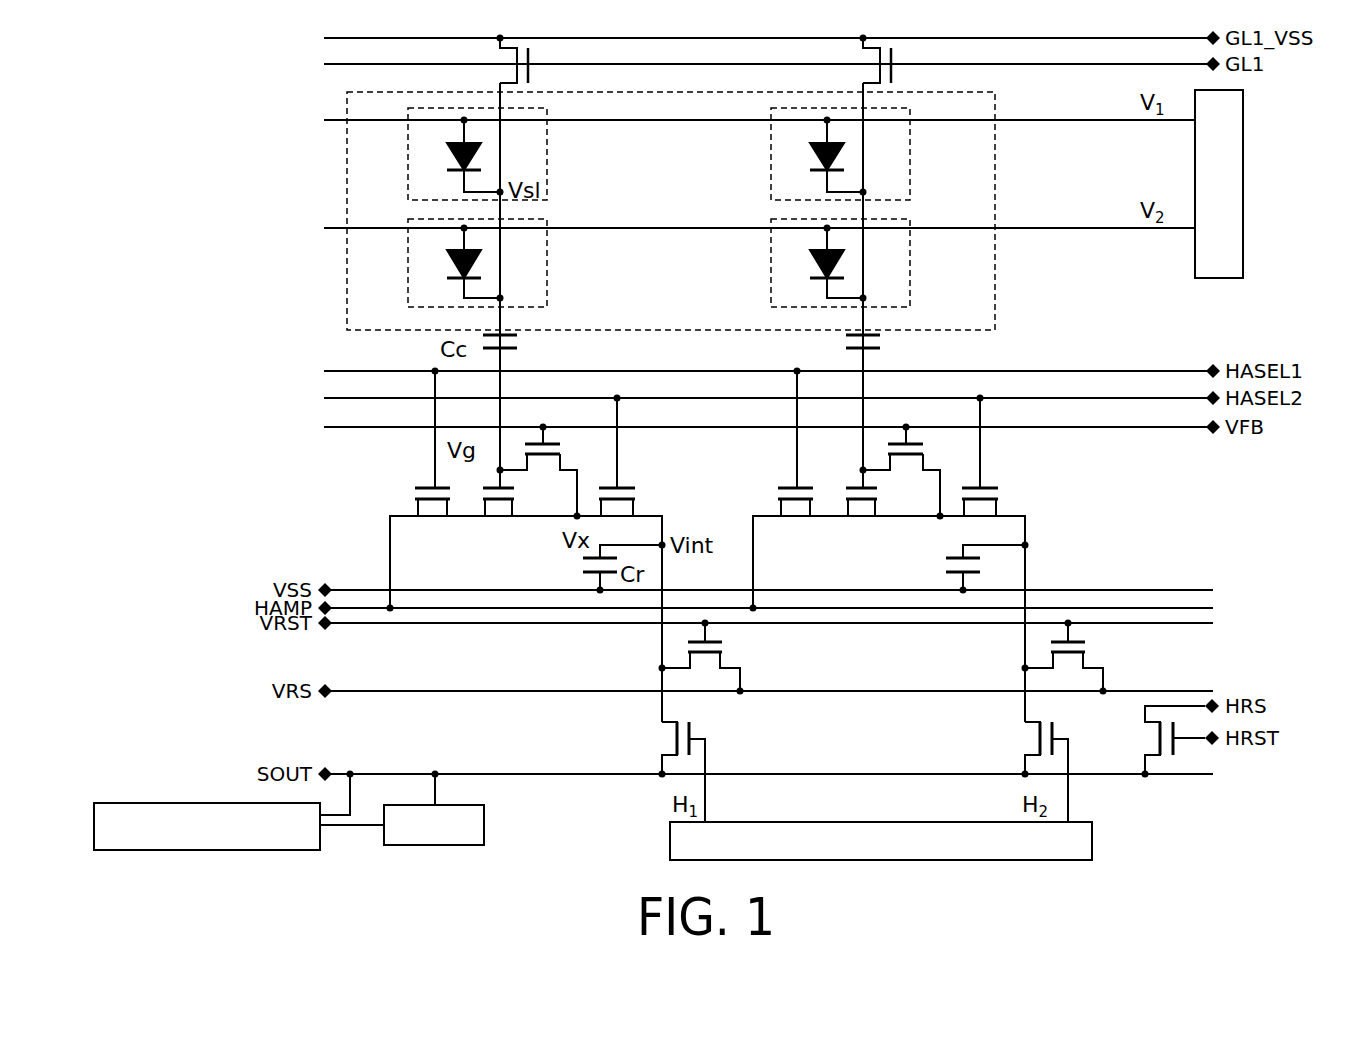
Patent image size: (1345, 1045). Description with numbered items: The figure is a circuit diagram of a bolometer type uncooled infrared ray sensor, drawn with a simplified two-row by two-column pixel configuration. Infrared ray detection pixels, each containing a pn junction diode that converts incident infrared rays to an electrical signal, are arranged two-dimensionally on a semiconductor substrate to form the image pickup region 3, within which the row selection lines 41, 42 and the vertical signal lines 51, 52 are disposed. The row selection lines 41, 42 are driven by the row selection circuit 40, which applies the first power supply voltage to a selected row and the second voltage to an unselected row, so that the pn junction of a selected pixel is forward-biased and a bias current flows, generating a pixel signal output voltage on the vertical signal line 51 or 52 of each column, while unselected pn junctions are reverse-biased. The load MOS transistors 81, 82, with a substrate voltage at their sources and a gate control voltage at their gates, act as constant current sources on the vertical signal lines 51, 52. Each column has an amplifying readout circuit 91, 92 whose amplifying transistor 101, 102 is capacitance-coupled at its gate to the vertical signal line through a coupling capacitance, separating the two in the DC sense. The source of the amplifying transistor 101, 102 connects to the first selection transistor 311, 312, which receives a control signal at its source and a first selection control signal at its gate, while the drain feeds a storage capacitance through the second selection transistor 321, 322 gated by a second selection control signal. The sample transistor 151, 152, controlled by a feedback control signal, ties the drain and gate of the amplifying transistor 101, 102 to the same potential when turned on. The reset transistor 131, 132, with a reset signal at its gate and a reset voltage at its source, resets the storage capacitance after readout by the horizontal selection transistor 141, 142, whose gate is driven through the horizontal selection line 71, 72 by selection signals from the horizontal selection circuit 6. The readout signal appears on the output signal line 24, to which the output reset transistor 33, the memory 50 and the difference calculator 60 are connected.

The image pickup region 3 is at (340, 101).
The load MOS transistor 81 is at (533, 68).
The load MOS transistor 82 is at (896, 68).
The vertical signal line 51 is at (501, 140).
The vertical signal line 52 is at (864, 140).
The row selection line 41 is at (1068, 122).
The row selection line 42 is at (1068, 230).
The row selection circuit 40 is at (1212, 278).
The amplifying readout circuit 91 is at (421, 463).
The amplifying readout circuit 92 is at (838, 463).
The sample transistor 151 is at (556, 441).
The sample transistor 152 is at (919, 441).
The first selection transistor 311 is at (415, 489).
The first selection transistor 312 is at (791, 520).
The amplifying transistor 101 is at (514, 493).
The amplifying transistor 102 is at (861, 520).
The second selection transistor 321 is at (637, 492).
The second selection transistor 322 is at (1000, 492).
The reset transistor 131 is at (727, 647).
The reset transistor 132 is at (1090, 647).
The horizontal selection transistor 141 is at (696, 727).
The horizontal selection transistor 142 is at (1059, 727).
The horizontal selection line 71 is at (706, 796).
The horizontal selection line 72 is at (1069, 796).
The output reset transistor 33 is at (1176, 746).
The horizontal selection circuit 6 is at (1093, 838).
The output signal line 24 is at (602, 789).
The memory 50 is at (485, 828).
The difference calculator 60 is at (321, 835).